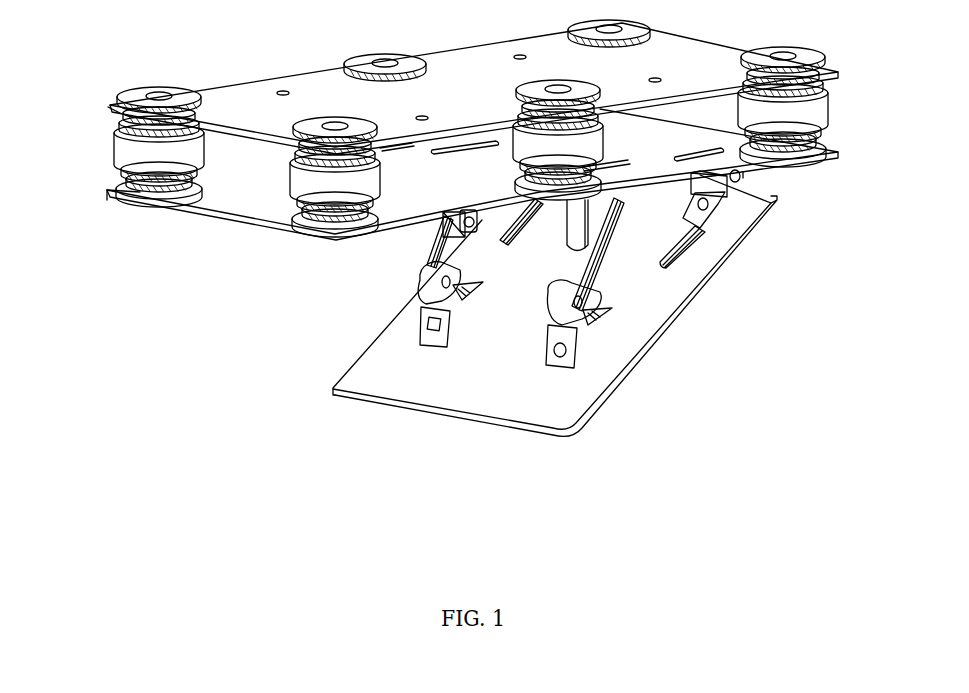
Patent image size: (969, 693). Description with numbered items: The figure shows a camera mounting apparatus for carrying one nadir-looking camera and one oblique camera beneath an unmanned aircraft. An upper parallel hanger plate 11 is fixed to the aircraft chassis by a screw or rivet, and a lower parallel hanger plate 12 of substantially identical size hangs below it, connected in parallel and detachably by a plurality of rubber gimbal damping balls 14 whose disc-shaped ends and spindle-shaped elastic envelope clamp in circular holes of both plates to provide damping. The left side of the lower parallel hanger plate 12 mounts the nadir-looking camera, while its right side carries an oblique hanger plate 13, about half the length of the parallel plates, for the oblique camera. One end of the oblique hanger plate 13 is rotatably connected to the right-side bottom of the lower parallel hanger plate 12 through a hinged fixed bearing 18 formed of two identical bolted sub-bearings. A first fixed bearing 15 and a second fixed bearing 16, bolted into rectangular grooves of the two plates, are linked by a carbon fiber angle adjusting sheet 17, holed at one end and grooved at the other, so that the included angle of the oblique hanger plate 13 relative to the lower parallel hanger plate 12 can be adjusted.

The upper parallel hanger plate 11 is at (836, 72).
The lower parallel hanger plate 12 is at (833, 150).
The oblique hanger plate 13 is at (333, 395).
The gimbal damping ball 14 is at (108, 150).
The first fixed bearing 15 is at (458, 212).
The second fixed bearing 16 is at (558, 364).
The angle adjusting sheet 17 is at (431, 239).
The hinged fixed bearing 18 is at (708, 213).